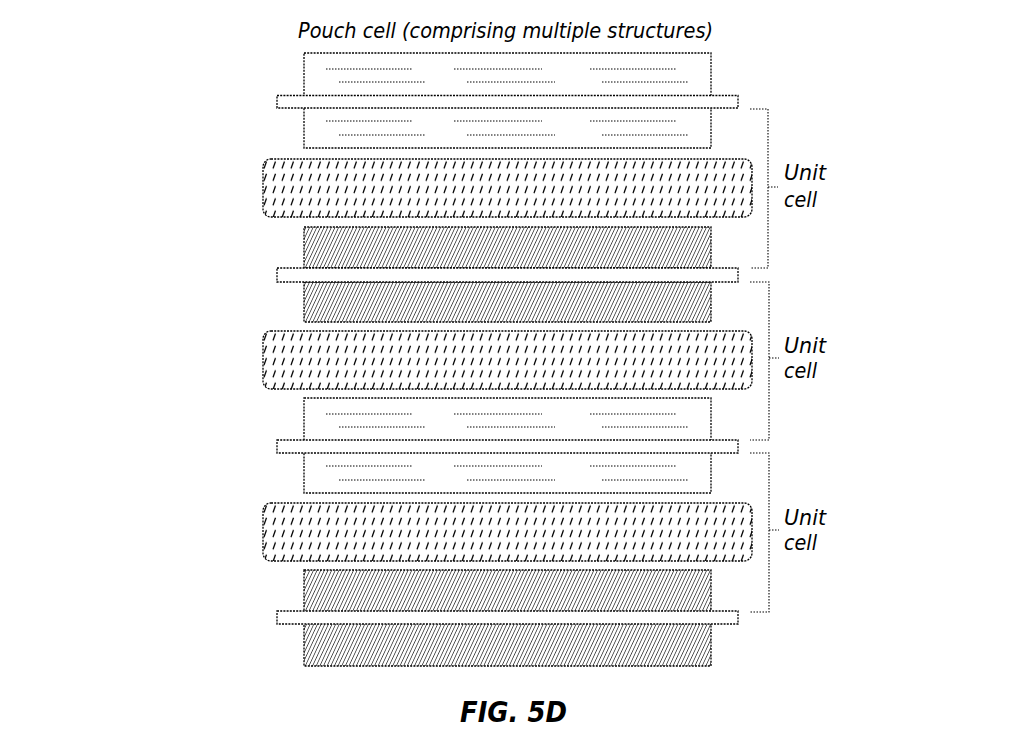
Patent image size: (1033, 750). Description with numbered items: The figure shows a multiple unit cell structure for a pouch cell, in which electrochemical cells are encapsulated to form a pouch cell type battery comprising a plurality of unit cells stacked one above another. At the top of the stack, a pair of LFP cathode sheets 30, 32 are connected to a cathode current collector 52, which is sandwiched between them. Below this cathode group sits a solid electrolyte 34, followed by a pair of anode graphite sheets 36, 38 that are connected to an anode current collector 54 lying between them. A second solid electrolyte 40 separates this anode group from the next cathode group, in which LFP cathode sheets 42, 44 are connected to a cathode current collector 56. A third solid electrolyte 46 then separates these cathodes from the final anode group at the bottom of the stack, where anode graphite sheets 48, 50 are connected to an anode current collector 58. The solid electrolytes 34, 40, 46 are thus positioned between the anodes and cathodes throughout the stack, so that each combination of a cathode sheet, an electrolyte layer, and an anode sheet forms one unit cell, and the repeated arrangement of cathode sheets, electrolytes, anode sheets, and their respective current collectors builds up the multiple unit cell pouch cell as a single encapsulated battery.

The LFP cathode sheet 30 is at (304, 80).
The LFP cathode sheet 32 is at (304, 129).
The solid electrolyte 34 is at (263, 170).
The anode graphite sheet 36 is at (304, 250).
The anode graphite sheet 38 is at (304, 301).
The solid electrolyte 40 is at (263, 343).
The LFP cathode sheet 42 is at (304, 425).
The LFP cathode sheet 44 is at (304, 474).
The solid electrolyte 46 is at (263, 515).
The anode graphite sheet 48 is at (304, 594).
The anode graphite sheet 50 is at (304, 646).
The cathode current collector 52 is at (725, 95).
The anode current collector 54 is at (725, 268).
The cathode current collector 56 is at (725, 440).
The anode current collector 58 is at (725, 611).